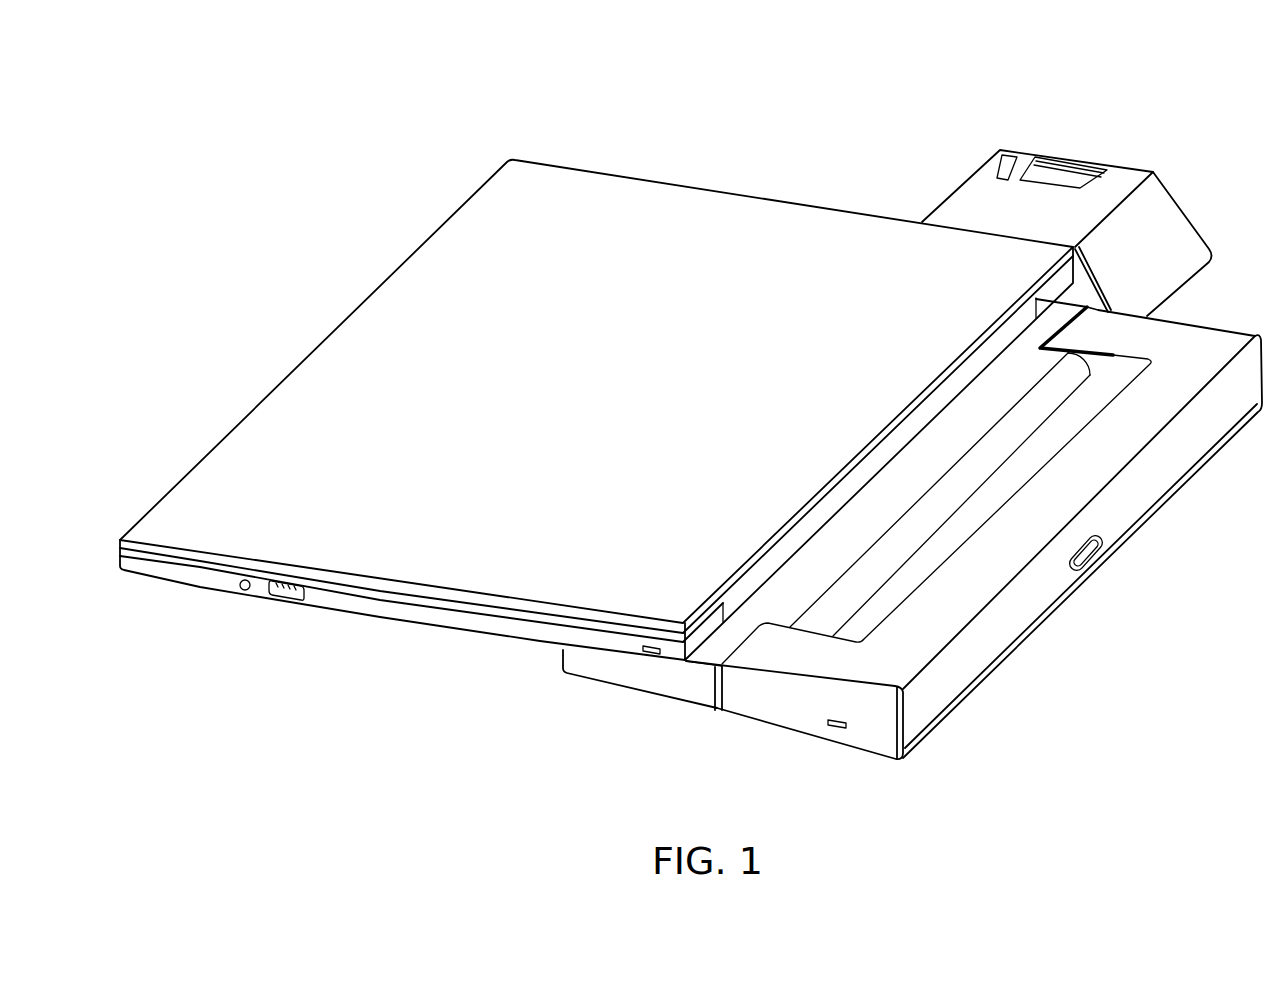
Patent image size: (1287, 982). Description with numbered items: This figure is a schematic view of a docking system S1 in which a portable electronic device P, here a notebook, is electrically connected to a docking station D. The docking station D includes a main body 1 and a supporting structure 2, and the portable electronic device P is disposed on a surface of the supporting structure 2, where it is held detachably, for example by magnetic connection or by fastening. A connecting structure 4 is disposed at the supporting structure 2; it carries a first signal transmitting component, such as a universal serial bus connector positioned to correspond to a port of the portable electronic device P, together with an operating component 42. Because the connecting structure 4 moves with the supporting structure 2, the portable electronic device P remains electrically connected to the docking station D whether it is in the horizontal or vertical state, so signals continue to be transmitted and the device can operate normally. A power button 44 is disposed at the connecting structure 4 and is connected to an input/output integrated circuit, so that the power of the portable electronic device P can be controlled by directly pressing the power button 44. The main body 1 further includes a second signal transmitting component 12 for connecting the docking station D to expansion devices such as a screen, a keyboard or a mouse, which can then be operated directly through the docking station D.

The docking system S1 is at (350, 100).
The portable electronic device P is at (704, 178).
The docking station D is at (1230, 324).
The main body 1 is at (790, 702).
The supporting structure 2 is at (646, 668).
The connecting structure 4 is at (1129, 181).
The operating component 42 is at (1070, 176).
The power button 44 is at (1018, 152).
The second signal transmitting component 12 is at (1106, 557).